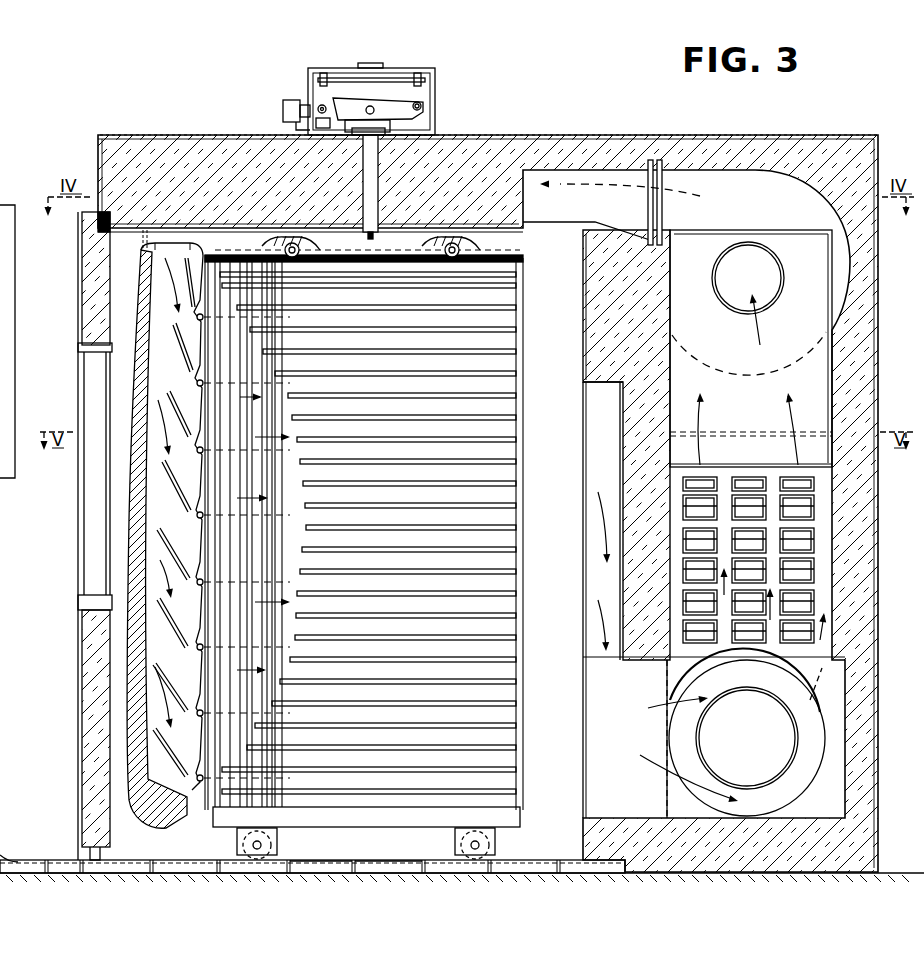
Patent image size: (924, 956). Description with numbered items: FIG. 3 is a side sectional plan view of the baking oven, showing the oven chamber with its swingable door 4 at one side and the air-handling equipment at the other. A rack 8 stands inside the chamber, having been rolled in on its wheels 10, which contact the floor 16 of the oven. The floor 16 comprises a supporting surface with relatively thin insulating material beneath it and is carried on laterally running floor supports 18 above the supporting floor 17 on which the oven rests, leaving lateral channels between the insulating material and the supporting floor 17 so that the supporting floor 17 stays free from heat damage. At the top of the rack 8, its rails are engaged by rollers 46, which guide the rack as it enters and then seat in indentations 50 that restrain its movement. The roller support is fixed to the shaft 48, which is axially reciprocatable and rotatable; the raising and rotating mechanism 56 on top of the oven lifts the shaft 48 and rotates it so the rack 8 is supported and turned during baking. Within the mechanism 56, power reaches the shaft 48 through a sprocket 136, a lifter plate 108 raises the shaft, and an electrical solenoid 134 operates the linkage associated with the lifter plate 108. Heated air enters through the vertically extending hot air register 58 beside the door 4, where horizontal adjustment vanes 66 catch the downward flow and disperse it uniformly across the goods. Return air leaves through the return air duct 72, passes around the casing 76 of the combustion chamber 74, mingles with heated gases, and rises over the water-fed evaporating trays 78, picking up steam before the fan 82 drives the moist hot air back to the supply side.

The swingable door 4 is at (78, 690).
The rack 8 is at (536, 437).
The wheels 10 is at (257, 860).
The floor 16 is at (366, 848).
The supporting floor 17 is at (414, 870).
The floor supports 18 is at (148, 870).
The rollers 46 is at (270, 248).
The shaft 48 is at (373, 240).
The indentation 50 is at (302, 248).
The raising and rotating mechanism 56 is at (440, 78).
The hot air register 58 is at (216, 461).
The horizontal adjustment vanes 66 is at (181, 334).
The return air duct 72 is at (614, 488).
The combustion chamber 74 is at (760, 742).
The casing 76 is at (806, 715).
The evaporating trays 78 is at (815, 593).
The fan 82 is at (822, 316).
The lifter plate 108 is at (396, 100).
The electrical solenoid 134 is at (290, 106).
The sprocket 136 is at (346, 79).